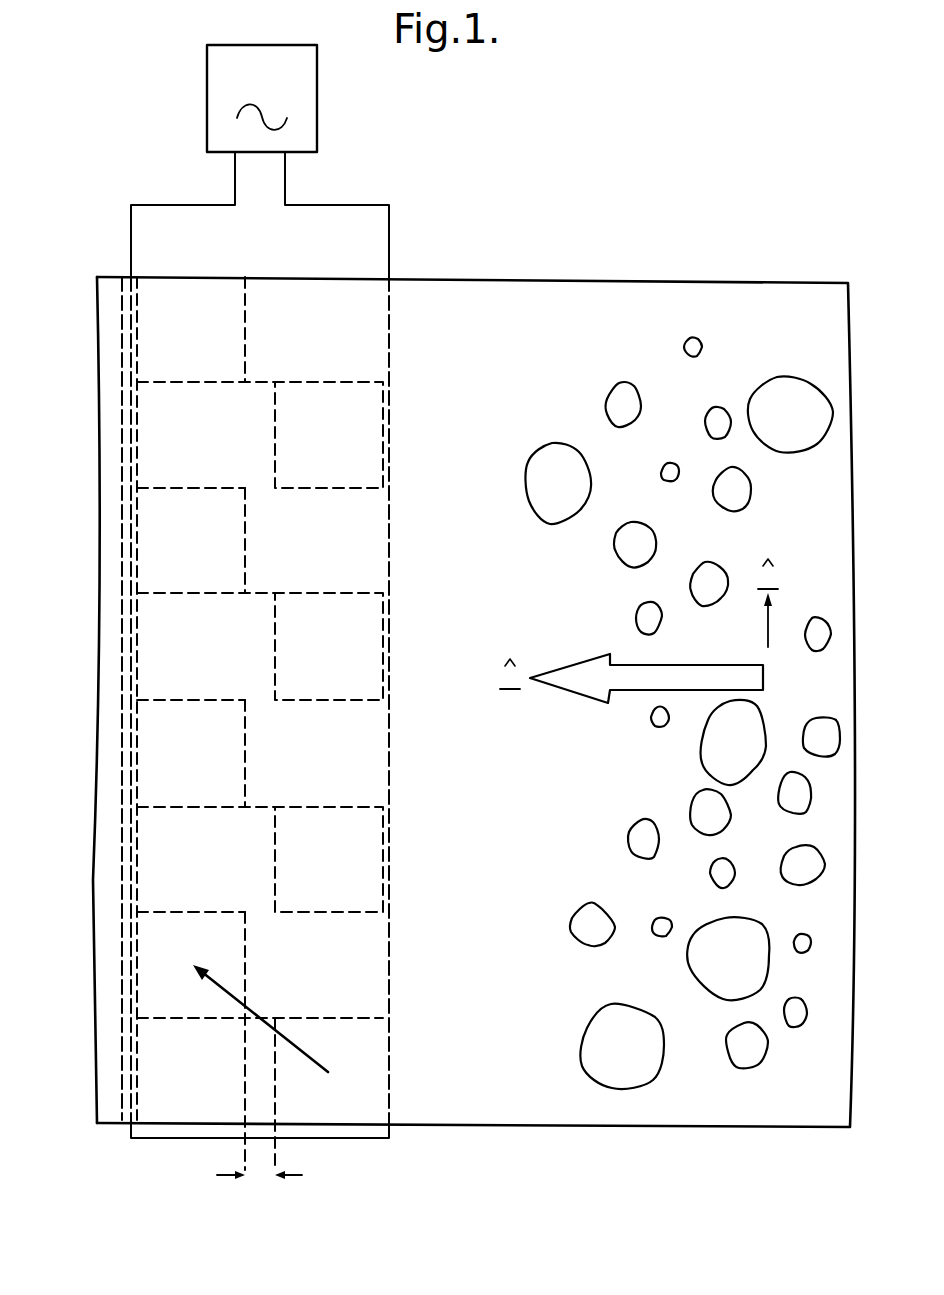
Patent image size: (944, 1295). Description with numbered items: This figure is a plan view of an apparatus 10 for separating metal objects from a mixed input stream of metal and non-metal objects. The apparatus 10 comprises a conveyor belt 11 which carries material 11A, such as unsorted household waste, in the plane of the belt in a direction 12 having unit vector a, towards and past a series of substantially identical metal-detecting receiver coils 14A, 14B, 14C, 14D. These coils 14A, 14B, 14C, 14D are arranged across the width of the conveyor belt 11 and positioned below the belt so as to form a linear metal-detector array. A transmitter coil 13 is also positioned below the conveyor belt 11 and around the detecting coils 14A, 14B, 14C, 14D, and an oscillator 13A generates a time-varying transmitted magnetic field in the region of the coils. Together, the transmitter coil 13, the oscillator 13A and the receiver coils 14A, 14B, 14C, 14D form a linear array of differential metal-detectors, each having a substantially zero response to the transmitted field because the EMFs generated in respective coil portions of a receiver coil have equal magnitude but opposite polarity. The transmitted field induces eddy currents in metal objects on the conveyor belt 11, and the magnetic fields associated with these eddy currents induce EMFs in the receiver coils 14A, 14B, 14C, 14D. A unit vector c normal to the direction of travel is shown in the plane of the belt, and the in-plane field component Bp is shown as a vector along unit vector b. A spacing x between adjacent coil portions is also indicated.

The apparatus 10 is at (580, 236).
The conveyor belt 11 is at (592, 336).
The material 11A is at (722, 576).
The direction 12 is at (685, 672).
The transmitter coil 13 is at (371, 205).
The oscillator 13A is at (238, 97).
The metal-detecting receiver coil 14A is at (122, 1018).
The metal-detecting receiver coil 14B is at (122, 807).
The metal-detecting receiver coil 14C is at (122, 593).
The metal-detecting receiver coil 14D is at (122, 382).
The in-plane component of magnetic field Bp is at (188, 962).
The gap spacing between coil segments x is at (259, 1177).